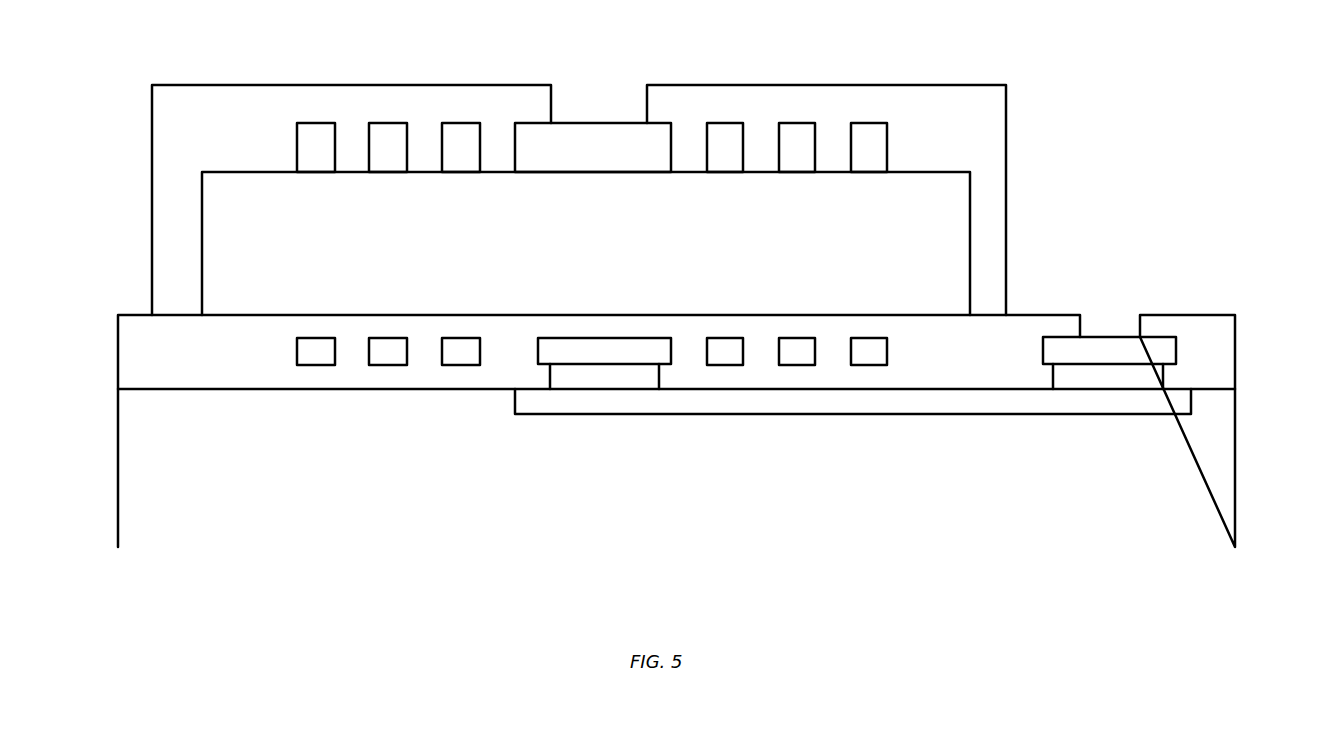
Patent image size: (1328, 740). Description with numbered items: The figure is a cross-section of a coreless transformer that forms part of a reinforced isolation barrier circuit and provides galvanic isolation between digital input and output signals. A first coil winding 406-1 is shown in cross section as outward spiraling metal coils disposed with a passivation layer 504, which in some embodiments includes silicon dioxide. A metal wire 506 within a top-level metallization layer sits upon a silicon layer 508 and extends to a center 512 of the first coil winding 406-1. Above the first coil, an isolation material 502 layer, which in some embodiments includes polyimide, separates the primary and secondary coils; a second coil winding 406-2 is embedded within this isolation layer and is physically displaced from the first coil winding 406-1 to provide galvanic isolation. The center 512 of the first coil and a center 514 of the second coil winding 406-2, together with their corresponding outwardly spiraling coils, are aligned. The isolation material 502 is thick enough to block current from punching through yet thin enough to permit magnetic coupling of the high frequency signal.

The isolation material layer 502 is at (950, 218).
The passivation layer 504 is at (1218, 345).
The metal wire 506 is at (932, 389).
The silicon layer 508 is at (1208, 457).
The center of the first coil winding 512 is at (672, 352).
The center of the second coil 514 is at (625, 123).
The first coil winding 406-1 is at (388, 366).
The second coil winding 406-2 is at (460, 123).